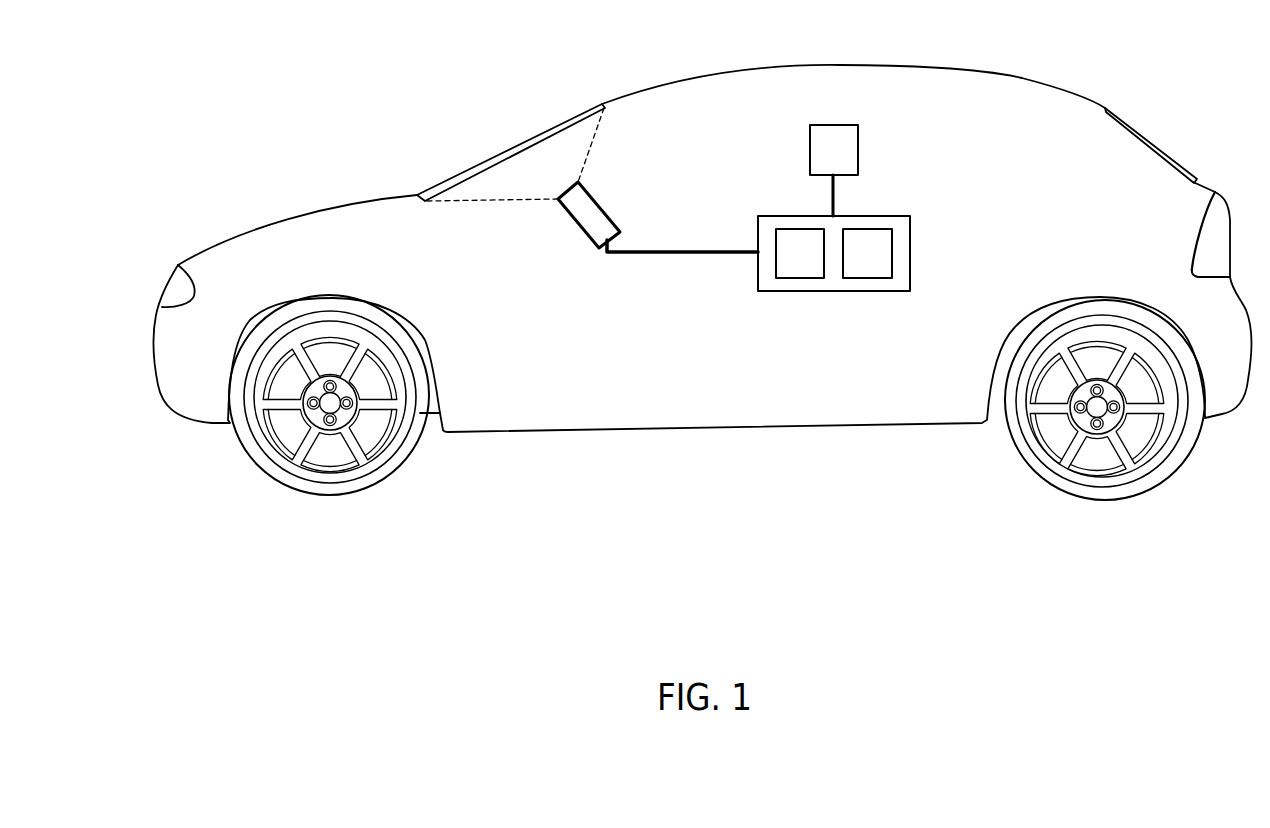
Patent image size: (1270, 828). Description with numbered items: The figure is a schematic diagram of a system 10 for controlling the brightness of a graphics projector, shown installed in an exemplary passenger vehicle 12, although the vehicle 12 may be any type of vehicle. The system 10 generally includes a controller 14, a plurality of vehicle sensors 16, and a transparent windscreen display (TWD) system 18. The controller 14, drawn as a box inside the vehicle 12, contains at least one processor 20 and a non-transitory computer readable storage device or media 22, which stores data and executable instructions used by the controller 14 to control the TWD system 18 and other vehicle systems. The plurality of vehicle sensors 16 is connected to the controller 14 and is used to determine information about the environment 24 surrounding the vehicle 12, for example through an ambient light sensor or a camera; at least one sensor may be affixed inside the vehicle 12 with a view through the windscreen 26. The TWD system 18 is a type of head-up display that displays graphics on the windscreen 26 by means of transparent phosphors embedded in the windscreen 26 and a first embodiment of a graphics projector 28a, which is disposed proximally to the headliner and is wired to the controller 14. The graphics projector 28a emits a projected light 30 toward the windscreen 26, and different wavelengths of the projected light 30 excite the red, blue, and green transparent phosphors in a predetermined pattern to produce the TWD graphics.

The system for controlling a brightness of a graphics projector 10 is at (811, 338).
The vehicle 12 is at (1022, 78).
The controller 14 is at (910, 291).
The plurality of vehicle sensors 16 is at (847, 162).
The transparent windscreen display (TWD) system 18 is at (652, 187).
The processor 20 is at (813, 264).
The non-transitory computer readable storage device or media 22 is at (880, 264).
The environment 24 is at (290, 106).
The windscreen 26 is at (549, 126).
The graphics projector 28a is at (583, 232).
The projected light 30 is at (489, 202).